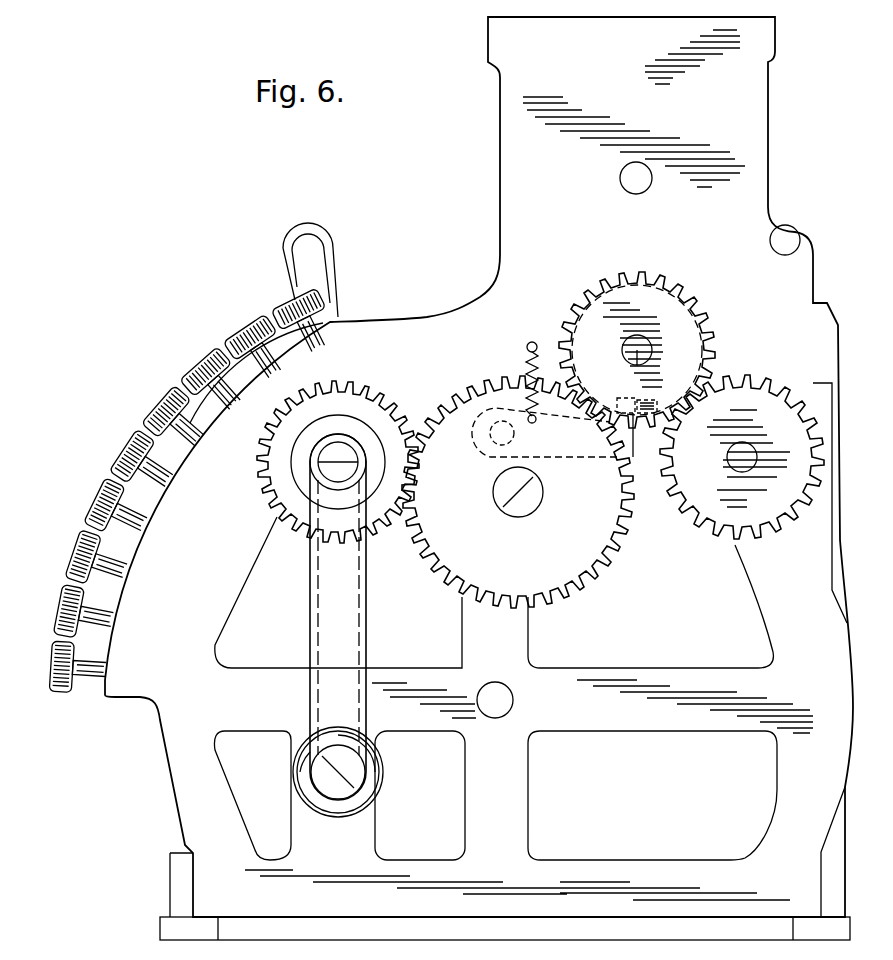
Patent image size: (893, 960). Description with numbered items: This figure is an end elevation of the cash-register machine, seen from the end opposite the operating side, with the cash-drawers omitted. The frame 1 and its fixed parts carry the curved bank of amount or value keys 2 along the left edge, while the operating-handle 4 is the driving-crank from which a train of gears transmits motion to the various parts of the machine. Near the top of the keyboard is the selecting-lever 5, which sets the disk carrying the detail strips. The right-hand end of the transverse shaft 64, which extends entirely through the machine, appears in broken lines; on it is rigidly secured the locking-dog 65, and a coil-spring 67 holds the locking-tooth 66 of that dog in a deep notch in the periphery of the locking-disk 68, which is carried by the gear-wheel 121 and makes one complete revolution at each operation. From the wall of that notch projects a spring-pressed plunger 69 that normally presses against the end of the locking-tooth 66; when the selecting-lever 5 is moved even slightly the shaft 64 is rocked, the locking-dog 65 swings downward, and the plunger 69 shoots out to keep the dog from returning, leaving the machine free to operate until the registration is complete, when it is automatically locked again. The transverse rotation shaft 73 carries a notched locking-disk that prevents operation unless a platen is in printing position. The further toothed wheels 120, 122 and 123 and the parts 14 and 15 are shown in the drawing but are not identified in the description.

The frame 1 is at (479, 478).
The amount or value keys 2 is at (210, 362).
The operating-handle 4 is at (338, 625).
The selecting-lever 5 is at (330, 286).
The bracket stem 14 is at (332, 306).
The key plate arc 15 is at (333, 334).
The transverse shaft 64 is at (510, 432).
The locking-dog 65 is at (552, 432).
The locking-tooth 66 is at (622, 397).
The coil-spring 67 is at (536, 343).
The locking-disk 68 is at (681, 316).
The spring-pressed plunger 69 is at (646, 398).
The transverse rotation shaft 73 is at (747, 453).
The gear 120 is at (633, 457).
The gear-wheel 121 is at (640, 263).
The gear 122 is at (518, 492).
The gear 123 is at (391, 403).